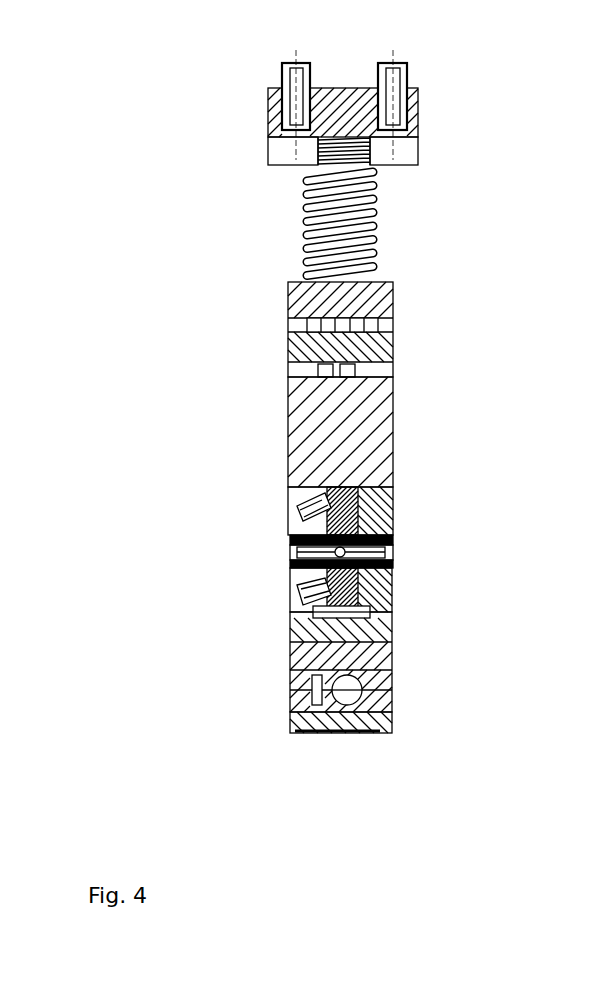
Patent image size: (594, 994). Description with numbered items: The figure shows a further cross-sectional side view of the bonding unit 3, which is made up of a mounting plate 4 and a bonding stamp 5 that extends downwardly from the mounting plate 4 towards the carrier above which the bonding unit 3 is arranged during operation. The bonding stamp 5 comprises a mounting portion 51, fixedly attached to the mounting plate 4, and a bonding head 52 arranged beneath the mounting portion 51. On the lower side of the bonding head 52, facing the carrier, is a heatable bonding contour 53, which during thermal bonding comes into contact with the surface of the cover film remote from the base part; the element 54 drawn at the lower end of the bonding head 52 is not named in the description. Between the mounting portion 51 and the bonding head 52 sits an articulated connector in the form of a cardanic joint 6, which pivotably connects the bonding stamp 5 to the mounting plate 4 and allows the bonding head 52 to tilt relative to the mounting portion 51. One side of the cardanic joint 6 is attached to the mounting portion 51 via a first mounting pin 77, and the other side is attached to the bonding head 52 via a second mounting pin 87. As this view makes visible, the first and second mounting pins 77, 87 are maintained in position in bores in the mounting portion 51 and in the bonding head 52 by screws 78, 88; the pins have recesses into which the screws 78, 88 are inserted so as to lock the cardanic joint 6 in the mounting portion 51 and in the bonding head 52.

The bonding unit 3 is at (296, 800).
The mounting plate 4 is at (465, 110).
The bonding stamp 5 is at (228, 418).
The mounting portion 51 is at (420, 437).
The bonding head 52 is at (423, 685).
The heatable bonding contour 53 is at (298, 737).
The bottom plate 54 is at (378, 722).
The cardanic joint 6 is at (393, 550).
The first mounting pin 77 is at (393, 513).
The screw 78 is at (292, 509).
The second mounting pin 87 is at (393, 592).
The screw 88 is at (292, 596).